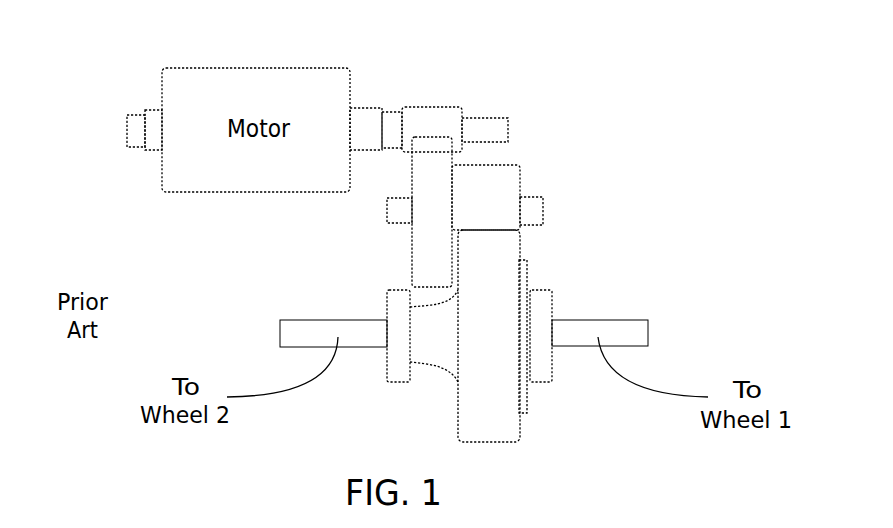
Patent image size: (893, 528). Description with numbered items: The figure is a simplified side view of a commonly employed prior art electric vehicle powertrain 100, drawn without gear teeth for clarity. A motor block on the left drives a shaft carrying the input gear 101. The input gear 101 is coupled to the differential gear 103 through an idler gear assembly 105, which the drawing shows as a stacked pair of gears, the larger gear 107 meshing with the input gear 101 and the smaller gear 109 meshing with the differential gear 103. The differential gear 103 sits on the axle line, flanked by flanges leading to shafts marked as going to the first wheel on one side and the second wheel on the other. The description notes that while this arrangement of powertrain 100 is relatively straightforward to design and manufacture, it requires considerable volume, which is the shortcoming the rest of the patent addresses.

The electric vehicle powertrain 100 is at (532, 88).
The input gear 101 is at (435, 120).
The differential gear 103 is at (495, 320).
The idler gear assembly 105 is at (562, 210).
The intermediate gear 107 is at (430, 210).
The intermediate pinion gear 109 is at (490, 210).